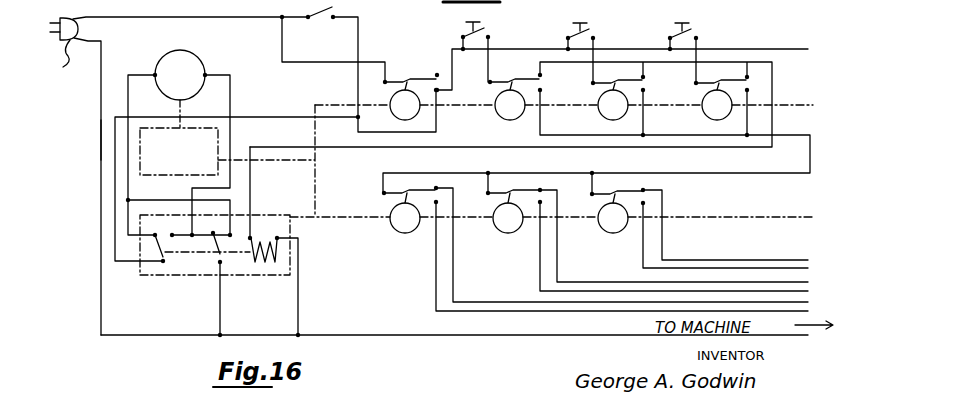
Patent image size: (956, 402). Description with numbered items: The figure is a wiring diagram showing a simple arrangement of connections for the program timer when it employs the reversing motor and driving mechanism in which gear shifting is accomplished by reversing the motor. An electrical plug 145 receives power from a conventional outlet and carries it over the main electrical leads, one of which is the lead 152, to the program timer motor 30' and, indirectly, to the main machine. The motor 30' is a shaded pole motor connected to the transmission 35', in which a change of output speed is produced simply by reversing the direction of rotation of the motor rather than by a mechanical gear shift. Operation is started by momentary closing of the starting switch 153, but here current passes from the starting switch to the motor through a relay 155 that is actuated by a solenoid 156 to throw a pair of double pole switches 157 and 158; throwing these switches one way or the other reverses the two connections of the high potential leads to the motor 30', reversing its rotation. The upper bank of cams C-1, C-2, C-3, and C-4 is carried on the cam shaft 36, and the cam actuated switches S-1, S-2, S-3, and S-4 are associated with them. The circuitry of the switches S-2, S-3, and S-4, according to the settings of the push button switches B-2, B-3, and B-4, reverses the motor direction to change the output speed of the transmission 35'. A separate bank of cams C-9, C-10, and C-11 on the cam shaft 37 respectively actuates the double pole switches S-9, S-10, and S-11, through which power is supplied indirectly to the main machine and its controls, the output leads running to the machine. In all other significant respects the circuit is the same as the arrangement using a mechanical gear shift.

The electrical plug 145 is at (178, 176).
The main electrical lead 152 is at (100, 139).
The starting switch 153 is at (330, 12).
The relay 155 is at (238, 283).
The solenoid 156 is at (263, 236).
The double pole switch 157 is at (165, 266).
The double pole switch 158 is at (215, 258).
The program timer motor 30' is at (198, 83).
The transmission 35' is at (183, 160).
The cam shaft 36 is at (805, 93).
The cam shaft 37 is at (764, 219).
The push button switch B-2 is at (460, 31).
The push button switch B-3 is at (565, 33).
The push button switch B-4 is at (667, 34).
The cam actuated switch S-1 is at (403, 78).
The cam actuated switch S-2 is at (526, 70).
The cam actuated switch S-3 is at (630, 71).
The cam actuated switch S-4 is at (733, 71).
The double pole switch S-9 is at (382, 194).
The double pole switch S-10 is at (530, 186).
The double pole switch S-11 is at (634, 186).
The cam C-1 is at (390, 100).
The cam C-2 is at (500, 118).
The cam C-3 is at (600, 113).
The cam C-4 is at (704, 115).
The cam C-9 is at (410, 233).
The cam C-10 is at (505, 234).
The cam C-11 is at (625, 235).